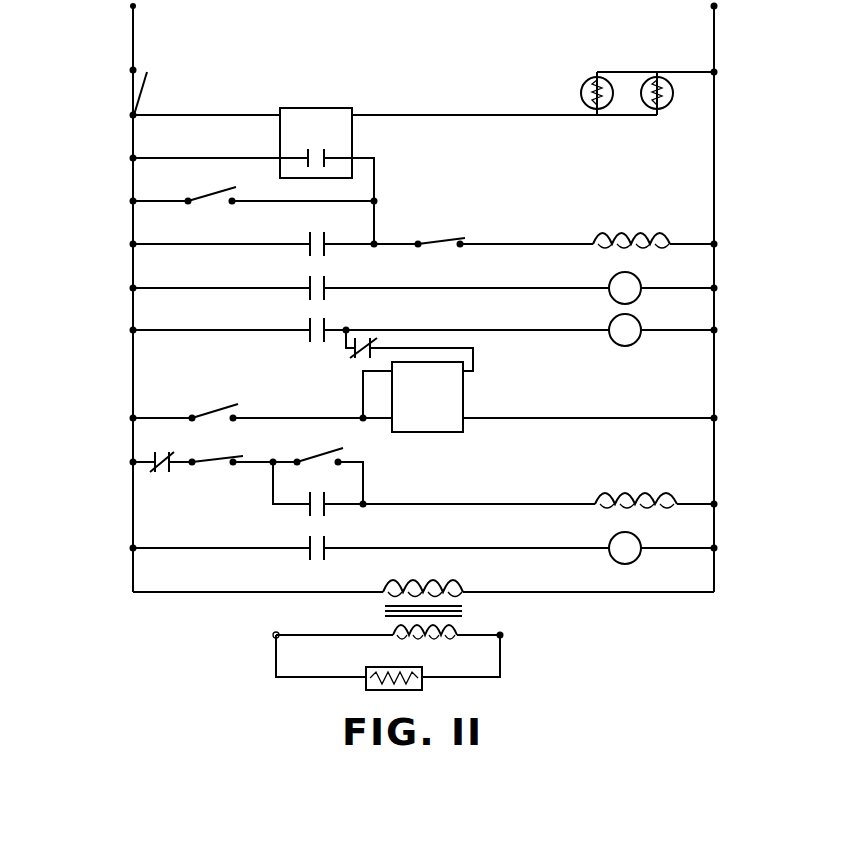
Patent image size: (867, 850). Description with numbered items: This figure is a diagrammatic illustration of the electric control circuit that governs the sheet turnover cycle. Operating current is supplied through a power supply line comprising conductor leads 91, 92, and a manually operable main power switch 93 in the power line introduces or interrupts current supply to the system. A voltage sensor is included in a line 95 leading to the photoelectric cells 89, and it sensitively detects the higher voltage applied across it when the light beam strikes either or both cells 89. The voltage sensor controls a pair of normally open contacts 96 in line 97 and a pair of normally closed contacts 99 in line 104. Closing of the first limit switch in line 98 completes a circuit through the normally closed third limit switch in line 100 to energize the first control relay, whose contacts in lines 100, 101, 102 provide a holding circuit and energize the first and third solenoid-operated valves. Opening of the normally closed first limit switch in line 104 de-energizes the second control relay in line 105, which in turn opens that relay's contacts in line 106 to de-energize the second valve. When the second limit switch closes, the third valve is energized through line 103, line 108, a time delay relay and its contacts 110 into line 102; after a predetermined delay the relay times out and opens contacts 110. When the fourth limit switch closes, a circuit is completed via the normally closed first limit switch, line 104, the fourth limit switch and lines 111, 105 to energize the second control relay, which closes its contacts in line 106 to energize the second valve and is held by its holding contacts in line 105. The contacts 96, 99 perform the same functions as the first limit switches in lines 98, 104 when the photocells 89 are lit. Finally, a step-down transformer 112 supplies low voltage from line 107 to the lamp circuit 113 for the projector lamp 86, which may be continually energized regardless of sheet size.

The projector lamp 86 is at (368, 682).
The photoelectric cells 89 is at (591, 90).
The conductor lead 91 is at (716, 37).
The conductor lead 92 is at (133, 37).
The main power switch 93 is at (143, 90).
The line 95 is at (222, 115).
The normally open contacts 96 is at (328, 155).
The line 97 is at (186, 158).
The line 98 is at (252, 203).
The normally closed contacts 99 is at (167, 472).
The line 100 is at (520, 244).
The line 101 is at (505, 288).
The line 102 is at (505, 330).
The line 103 is at (268, 418).
The line 104 is at (253, 460).
The line 105 is at (503, 504).
The line 106 is at (470, 548).
The line 107 is at (537, 592).
The line 108 is at (362, 388).
The contacts 110 is at (352, 350).
The line 111 is at (365, 482).
The step-down transformer 112 is at (483, 611).
The lamp circuit 113 is at (525, 668).